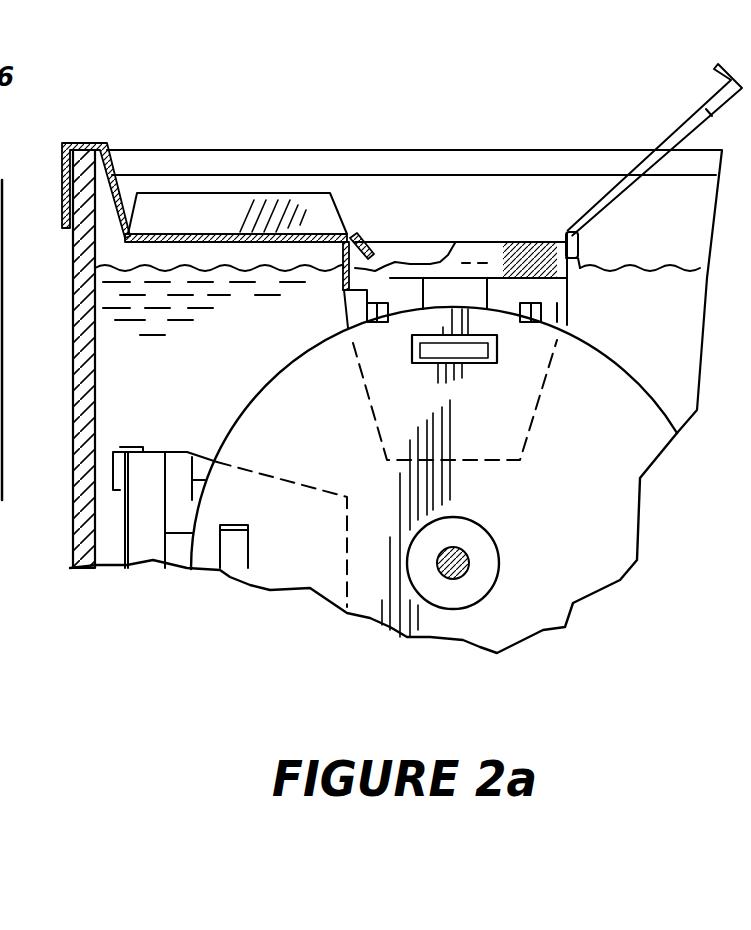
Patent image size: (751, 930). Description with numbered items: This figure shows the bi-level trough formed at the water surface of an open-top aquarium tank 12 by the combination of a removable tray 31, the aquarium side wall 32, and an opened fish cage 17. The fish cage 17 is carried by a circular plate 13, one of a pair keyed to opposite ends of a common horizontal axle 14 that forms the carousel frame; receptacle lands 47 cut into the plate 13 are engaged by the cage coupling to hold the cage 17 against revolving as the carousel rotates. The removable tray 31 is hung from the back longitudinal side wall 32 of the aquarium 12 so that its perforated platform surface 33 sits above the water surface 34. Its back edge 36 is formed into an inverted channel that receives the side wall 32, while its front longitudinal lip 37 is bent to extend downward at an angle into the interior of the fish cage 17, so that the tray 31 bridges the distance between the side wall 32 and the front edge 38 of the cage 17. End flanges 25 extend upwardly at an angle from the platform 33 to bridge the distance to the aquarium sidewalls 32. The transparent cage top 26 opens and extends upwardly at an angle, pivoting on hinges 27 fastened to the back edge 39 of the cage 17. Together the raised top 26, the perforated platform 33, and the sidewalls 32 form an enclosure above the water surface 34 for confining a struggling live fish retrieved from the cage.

The aquarium tank 12 is at (481, 150).
The circular plate 13 is at (328, 455).
The horizontal axle 14 is at (467, 560).
The fish cage 17 is at (180, 452).
The end flange 25 is at (282, 205).
The transparent top 26 is at (662, 140).
The hinge 27 is at (578, 243).
The removable tray 31 is at (190, 172).
The side wall 32 is at (78, 310).
The perforated platform surface 33 is at (214, 226).
The water surface 34 is at (213, 272).
The back edge 36 is at (58, 140).
The front longitudinal lip 37 is at (374, 246).
The front edge 38 is at (335, 300).
The back edge 39 is at (574, 270).
The receptacle land 47 is at (465, 358).